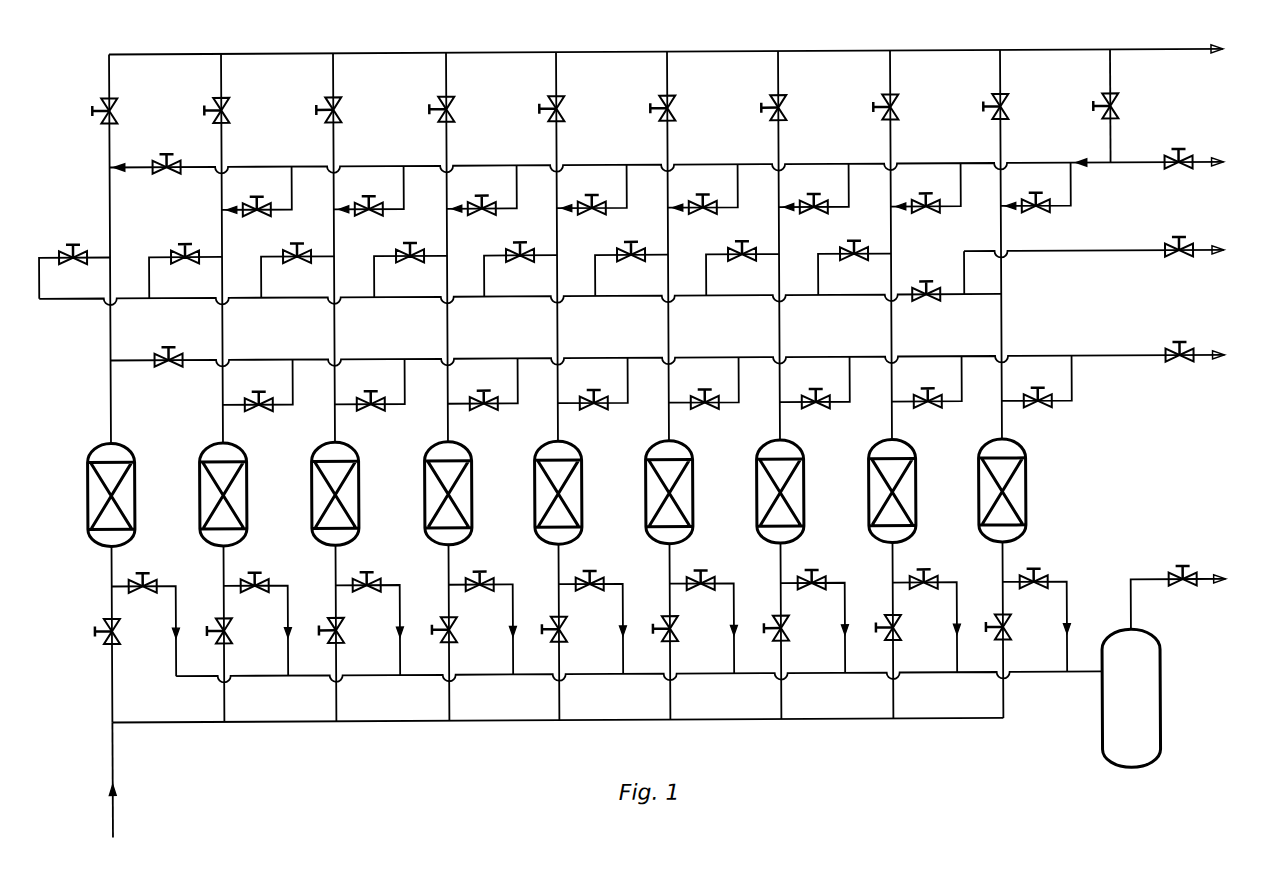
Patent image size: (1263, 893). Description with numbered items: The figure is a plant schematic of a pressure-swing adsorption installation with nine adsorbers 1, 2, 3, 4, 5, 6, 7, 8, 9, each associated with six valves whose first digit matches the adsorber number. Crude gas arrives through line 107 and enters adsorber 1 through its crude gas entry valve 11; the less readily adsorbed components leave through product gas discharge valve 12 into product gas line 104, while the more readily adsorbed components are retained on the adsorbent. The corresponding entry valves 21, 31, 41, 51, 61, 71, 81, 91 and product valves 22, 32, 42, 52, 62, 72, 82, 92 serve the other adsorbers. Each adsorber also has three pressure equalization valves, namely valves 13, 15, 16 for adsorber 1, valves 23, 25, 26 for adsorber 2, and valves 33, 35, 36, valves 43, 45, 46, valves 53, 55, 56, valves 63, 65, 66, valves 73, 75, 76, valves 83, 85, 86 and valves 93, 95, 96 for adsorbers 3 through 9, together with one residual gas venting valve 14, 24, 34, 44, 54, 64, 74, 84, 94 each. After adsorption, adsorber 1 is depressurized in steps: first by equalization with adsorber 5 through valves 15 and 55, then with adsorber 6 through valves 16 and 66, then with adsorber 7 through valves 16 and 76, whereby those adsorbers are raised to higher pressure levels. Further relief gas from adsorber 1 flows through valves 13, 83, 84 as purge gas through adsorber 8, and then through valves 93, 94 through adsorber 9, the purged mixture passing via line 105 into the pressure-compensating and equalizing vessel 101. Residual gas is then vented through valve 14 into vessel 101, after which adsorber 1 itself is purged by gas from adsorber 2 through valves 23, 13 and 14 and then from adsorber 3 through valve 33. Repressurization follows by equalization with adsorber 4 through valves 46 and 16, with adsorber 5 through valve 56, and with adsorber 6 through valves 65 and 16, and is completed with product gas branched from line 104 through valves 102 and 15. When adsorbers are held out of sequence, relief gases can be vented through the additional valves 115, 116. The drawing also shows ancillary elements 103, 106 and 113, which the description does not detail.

The adsorber 1 is at (133, 497).
The adsorber 2 is at (245, 497).
The adsorber 3 is at (357, 497).
The adsorber 4 is at (470, 497).
The adsorber 5 is at (580, 497).
The adsorber 6 is at (691, 497).
The adsorber 7 is at (802, 497).
The adsorber 8 is at (914, 497).
The adsorber 9 is at (1024, 497).
The crude gas entry valve 11 is at (116, 631).
The product gas discharge valve 12 is at (118, 108).
The pressure equalization valve 13 is at (167, 365).
The residual gas venting valve 14 is at (140, 591).
The pressure equalization valve 15 is at (166, 172).
The pressure equalization valve 16 is at (72, 262).
The crude gas entry valve 21 is at (228, 631).
The product gas discharge valve 22 is at (230, 108).
The pressure equalization valve 23 is at (257, 410).
The residual gas venting valve 24 is at (252, 591).
The pressure equalization valve 25 is at (256, 215).
The pressure equalization valve 26 is at (184, 262).
The crude gas entry valve 31 is at (340, 631).
The product gas discharge valve 32 is at (342, 108).
The pressure equalization valve 33 is at (369, 410).
The residual gas venting valve 34 is at (364, 591).
The pressure equalization valve 35 is at (368, 215).
The pressure equalization valve 36 is at (296, 262).
The crude gas entry valve 41 is at (453, 631).
The product gas discharge valve 42 is at (455, 108).
The pressure equalization valve 43 is at (482, 410).
The residual gas venting valve 44 is at (477, 591).
The pressure equalization valve 45 is at (481, 215).
The pressure equalization valve 46 is at (409, 262).
The crude gas entry valve 51 is at (563, 631).
The product gas discharge valve 52 is at (565, 108).
The pressure equalization valve 53 is at (592, 410).
The residual gas venting valve 54 is at (587, 591).
The pressure equalization valve 55 is at (591, 215).
The pressure equalization valve 56 is at (519, 262).
The crude gas entry valve 61 is at (674, 631).
The product gas discharge valve 62 is at (676, 108).
The pressure equalization valve 63 is at (703, 410).
The residual gas venting valve 64 is at (698, 591).
The pressure equalization valve 65 is at (702, 215).
The pressure equalization valve 66 is at (630, 262).
The crude gas entry valve 71 is at (785, 631).
The product gas discharge valve 72 is at (787, 108).
The pressure equalization valve 73 is at (814, 410).
The residual gas venting valve 74 is at (809, 591).
The pressure equalization valve 75 is at (813, 215).
The pressure equalization valve 76 is at (741, 262).
The crude gas entry valve 81 is at (897, 631).
The product gas discharge valve 82 is at (899, 108).
The pressure equalization valve 83 is at (926, 410).
The residual gas venting valve 84 is at (921, 591).
The pressure equalization valve 85 is at (925, 215).
The pressure equalization valve 86 is at (853, 262).
The crude gas entry valve 91 is at (1007, 631).
The product gas discharge valve 92 is at (1009, 108).
The pressure equalization valve 93 is at (1036, 410).
The residual gas venting valve 94 is at (1031, 591).
The pressure equalization valve 95 is at (1035, 215).
The pressure equalization valve 96 is at (925, 303).
The pressure-compensating and equalizing vessel 101 is at (1157, 690).
The valve 102 is at (1119, 108).
The waste gas outlet valve 103 is at (1178, 590).
The product gas line 104 is at (611, 53).
The line 105 is at (1037, 674).
The waste gas outlet line 106 is at (1203, 582).
The crude gas line 107 is at (110, 760).
The equalization line valve 113 is at (1178, 365).
The additional valve 115 is at (1178, 172).
The additional valve 116 is at (1178, 260).